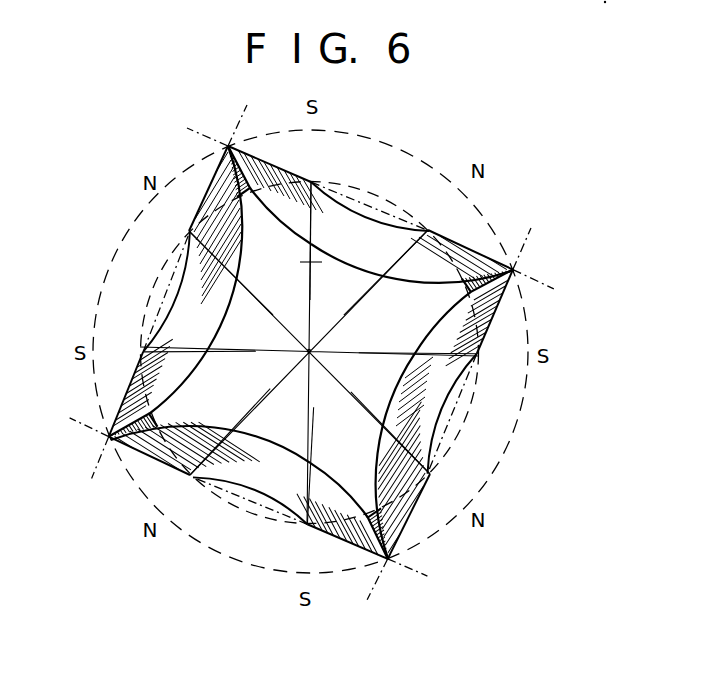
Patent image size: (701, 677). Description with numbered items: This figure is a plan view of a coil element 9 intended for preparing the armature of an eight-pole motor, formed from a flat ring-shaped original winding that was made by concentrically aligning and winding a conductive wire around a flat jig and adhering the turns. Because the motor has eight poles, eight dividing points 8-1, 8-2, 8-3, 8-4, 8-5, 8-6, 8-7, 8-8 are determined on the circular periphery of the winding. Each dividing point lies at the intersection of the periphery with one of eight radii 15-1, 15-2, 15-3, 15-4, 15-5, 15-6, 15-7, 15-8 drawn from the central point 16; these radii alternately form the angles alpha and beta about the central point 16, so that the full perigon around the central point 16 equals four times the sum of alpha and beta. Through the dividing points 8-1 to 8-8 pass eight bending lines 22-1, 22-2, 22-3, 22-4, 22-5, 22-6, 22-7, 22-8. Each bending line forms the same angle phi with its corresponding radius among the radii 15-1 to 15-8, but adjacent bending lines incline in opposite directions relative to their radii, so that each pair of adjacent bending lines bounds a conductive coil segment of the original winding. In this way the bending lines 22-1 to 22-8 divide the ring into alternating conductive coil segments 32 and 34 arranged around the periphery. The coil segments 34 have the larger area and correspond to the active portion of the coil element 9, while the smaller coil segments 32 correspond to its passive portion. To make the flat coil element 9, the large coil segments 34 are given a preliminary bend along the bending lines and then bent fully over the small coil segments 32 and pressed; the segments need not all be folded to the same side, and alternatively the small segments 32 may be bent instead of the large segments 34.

The coil element 9 is at (400, 153).
The central point 16 is at (325, 352).
The conductive coil segment 32 is at (254, 152).
The conductive coil segment 34 is at (343, 272).
The dividing point 8-1 is at (429, 229).
The dividing point 8-2 is at (318, 184).
The dividing point 8-3 is at (188, 232).
The dividing point 8-4 is at (140, 348).
The dividing point 8-5 is at (190, 477).
The dividing point 8-6 is at (307, 526).
The dividing point 8-7 is at (431, 474).
The dividing point 8-8 is at (480, 360).
The radius 15-1 is at (404, 258).
The radius 15-2 is at (313, 229).
The radius 15-3 is at (209, 266).
The radius 15-4 is at (188, 350).
The radius 15-5 is at (242, 420).
The radius 15-6 is at (306, 474).
The radius 15-7 is at (397, 394).
The radius 15-8 is at (418, 349).
The bending line 22-1 is at (485, 245).
The bending line 22-2 is at (268, 164).
The bending line 22-3 is at (212, 172).
The bending line 22-4 is at (112, 388).
The bending line 22-5 is at (129, 455).
The bending line 22-6 is at (389, 567).
The bending line 22-7 is at (408, 530).
The bending line 22-8 is at (508, 296).